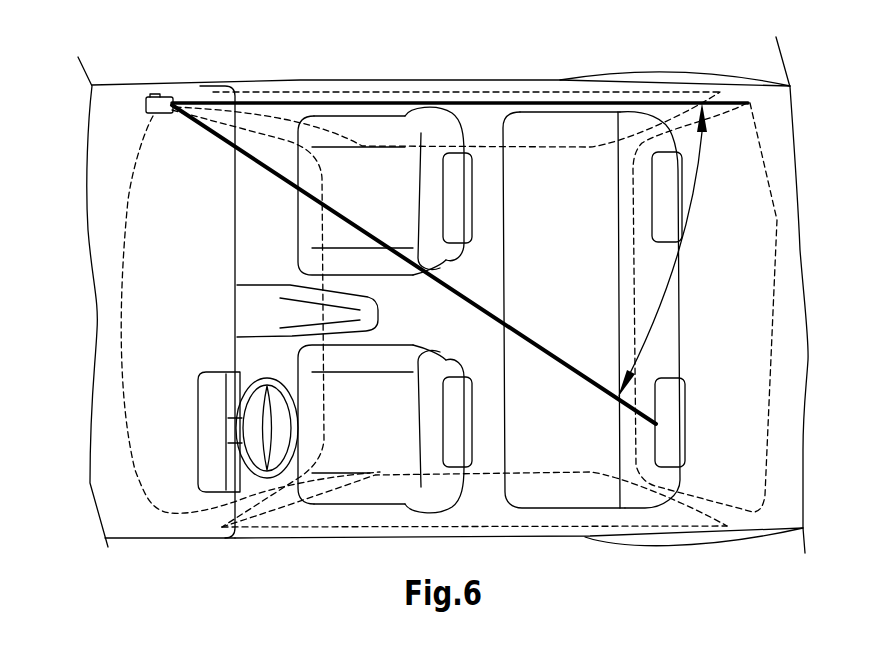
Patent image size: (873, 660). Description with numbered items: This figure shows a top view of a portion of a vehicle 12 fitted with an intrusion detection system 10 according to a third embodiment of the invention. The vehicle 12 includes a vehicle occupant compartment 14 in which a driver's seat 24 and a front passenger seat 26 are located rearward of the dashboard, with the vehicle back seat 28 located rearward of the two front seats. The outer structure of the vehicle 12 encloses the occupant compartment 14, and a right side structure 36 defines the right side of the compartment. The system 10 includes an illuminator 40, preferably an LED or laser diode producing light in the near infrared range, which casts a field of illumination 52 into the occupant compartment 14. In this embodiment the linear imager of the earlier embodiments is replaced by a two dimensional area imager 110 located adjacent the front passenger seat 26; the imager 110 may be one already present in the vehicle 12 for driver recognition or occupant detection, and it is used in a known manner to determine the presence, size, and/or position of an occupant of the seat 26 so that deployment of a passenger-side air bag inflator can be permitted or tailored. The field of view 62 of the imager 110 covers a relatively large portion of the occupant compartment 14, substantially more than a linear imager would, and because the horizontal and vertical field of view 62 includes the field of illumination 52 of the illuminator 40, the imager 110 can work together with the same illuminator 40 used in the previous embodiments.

The intrusion detection system 10 is at (244, 56).
The vehicle 12 is at (70, 203).
The vehicle occupant compartment 14 is at (448, 319).
The driver's seat 24 is at (442, 433).
The front passenger seat 26 is at (455, 262).
The vehicle back seat 28 is at (680, 333).
The right side structure 36 is at (545, 72).
The illuminator 40 is at (153, 113).
The field of illumination 52 is at (290, 92).
The field of view 62 is at (697, 200).
The two dimensional imager 110 is at (132, 100).